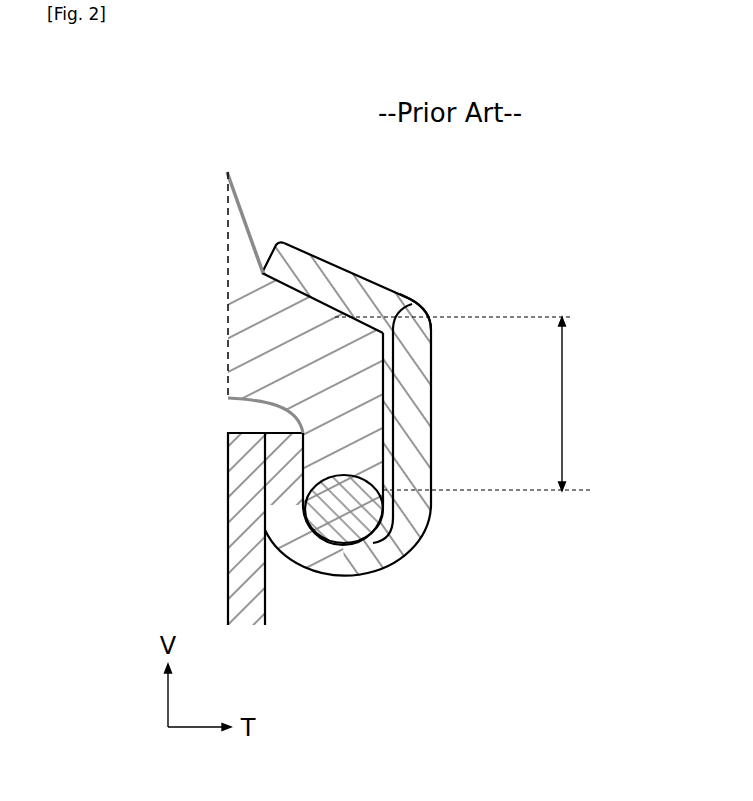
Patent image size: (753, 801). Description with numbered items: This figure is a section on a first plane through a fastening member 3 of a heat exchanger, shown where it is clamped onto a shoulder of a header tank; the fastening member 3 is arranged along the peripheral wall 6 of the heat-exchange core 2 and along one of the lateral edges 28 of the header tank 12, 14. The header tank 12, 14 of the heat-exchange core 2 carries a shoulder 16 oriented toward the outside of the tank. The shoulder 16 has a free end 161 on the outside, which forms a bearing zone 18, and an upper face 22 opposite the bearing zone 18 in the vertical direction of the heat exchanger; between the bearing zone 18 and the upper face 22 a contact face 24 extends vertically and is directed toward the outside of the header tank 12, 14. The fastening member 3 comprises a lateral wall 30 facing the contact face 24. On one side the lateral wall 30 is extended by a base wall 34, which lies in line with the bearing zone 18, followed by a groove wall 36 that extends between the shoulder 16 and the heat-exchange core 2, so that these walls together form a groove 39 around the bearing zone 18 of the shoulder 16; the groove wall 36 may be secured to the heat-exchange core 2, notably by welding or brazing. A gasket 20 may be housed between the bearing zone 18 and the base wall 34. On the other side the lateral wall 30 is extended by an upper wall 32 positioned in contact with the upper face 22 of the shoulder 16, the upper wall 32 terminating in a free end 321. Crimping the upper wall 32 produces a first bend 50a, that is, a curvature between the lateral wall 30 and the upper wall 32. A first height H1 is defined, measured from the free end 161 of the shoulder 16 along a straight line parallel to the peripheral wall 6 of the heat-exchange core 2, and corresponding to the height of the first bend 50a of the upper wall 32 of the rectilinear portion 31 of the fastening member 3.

The heat-exchange core 2 is at (243, 533).
The fastening member 3 is at (454, 485).
The peripheral wall 6 is at (242, 513).
The header tank 12 is at (169, 284).
The header tank 14 is at (243, 331).
The shoulder 16 is at (327, 382).
The bearing zone 18 is at (455, 516).
The gasket 20 is at (347, 517).
The upper face 22 is at (307, 293).
The contact face 24 is at (383, 395).
The lateral edge 28 is at (243, 268).
The lateral wall 30 is at (422, 445).
The rectilinear portion 31 is at (407, 527).
The upper wall 32 is at (338, 278).
The base wall 34 is at (335, 570).
The groove wall 36 is at (266, 458).
The groove 39 is at (350, 559).
The first bend 50a is at (407, 310).
The free end 161 is at (378, 490).
The free end 321 is at (266, 262).
The first height H1 is at (562, 353).